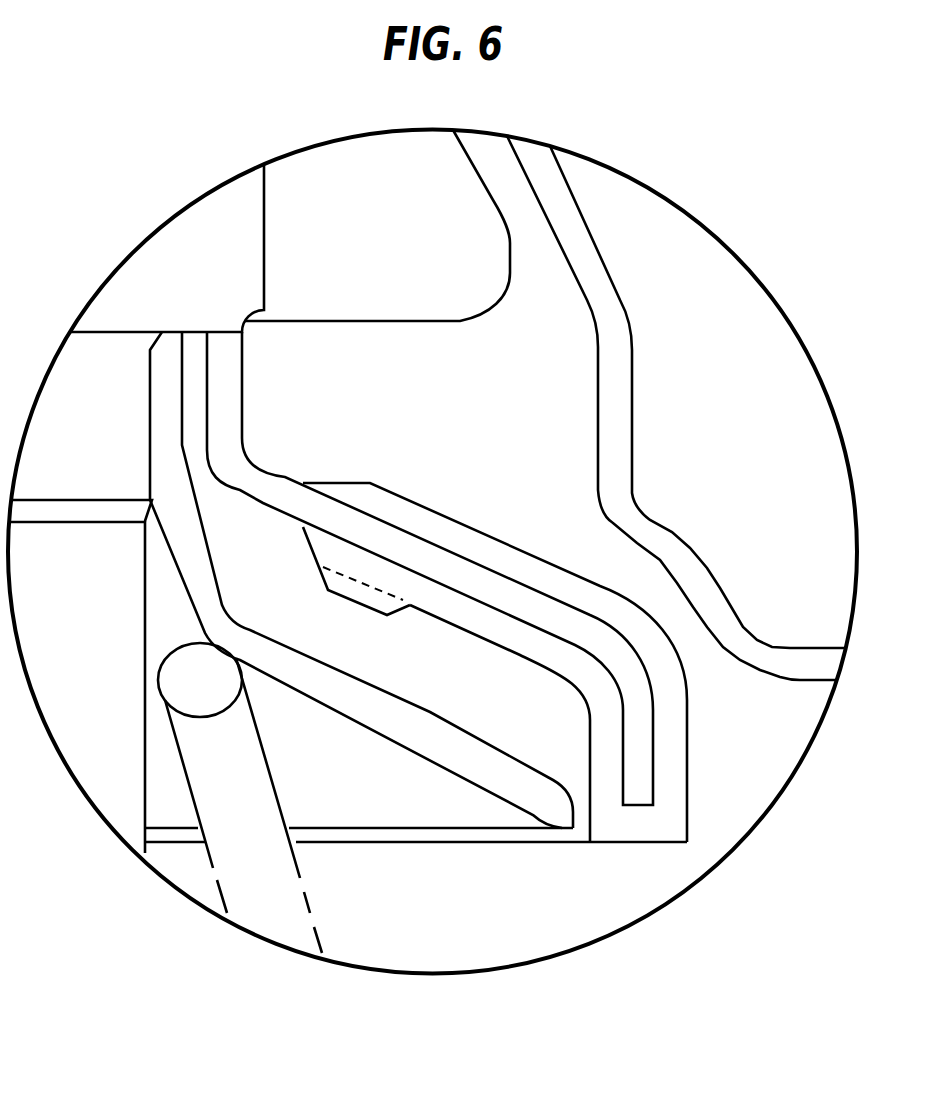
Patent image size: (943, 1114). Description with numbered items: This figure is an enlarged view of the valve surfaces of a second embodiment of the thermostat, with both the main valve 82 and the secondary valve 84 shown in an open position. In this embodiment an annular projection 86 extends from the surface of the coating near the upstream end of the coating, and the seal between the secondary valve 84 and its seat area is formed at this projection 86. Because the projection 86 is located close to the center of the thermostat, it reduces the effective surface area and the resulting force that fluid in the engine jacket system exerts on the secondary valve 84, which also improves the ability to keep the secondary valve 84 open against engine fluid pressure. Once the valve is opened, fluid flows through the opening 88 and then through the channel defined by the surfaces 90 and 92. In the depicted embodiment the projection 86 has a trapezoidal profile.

The main valve 82 is at (649, 798).
The secondary valve 84 is at (552, 815).
The annular projection 86 is at (373, 603).
The opening 88 is at (581, 845).
The surface 90 is at (479, 732).
The surface 92 is at (478, 640).